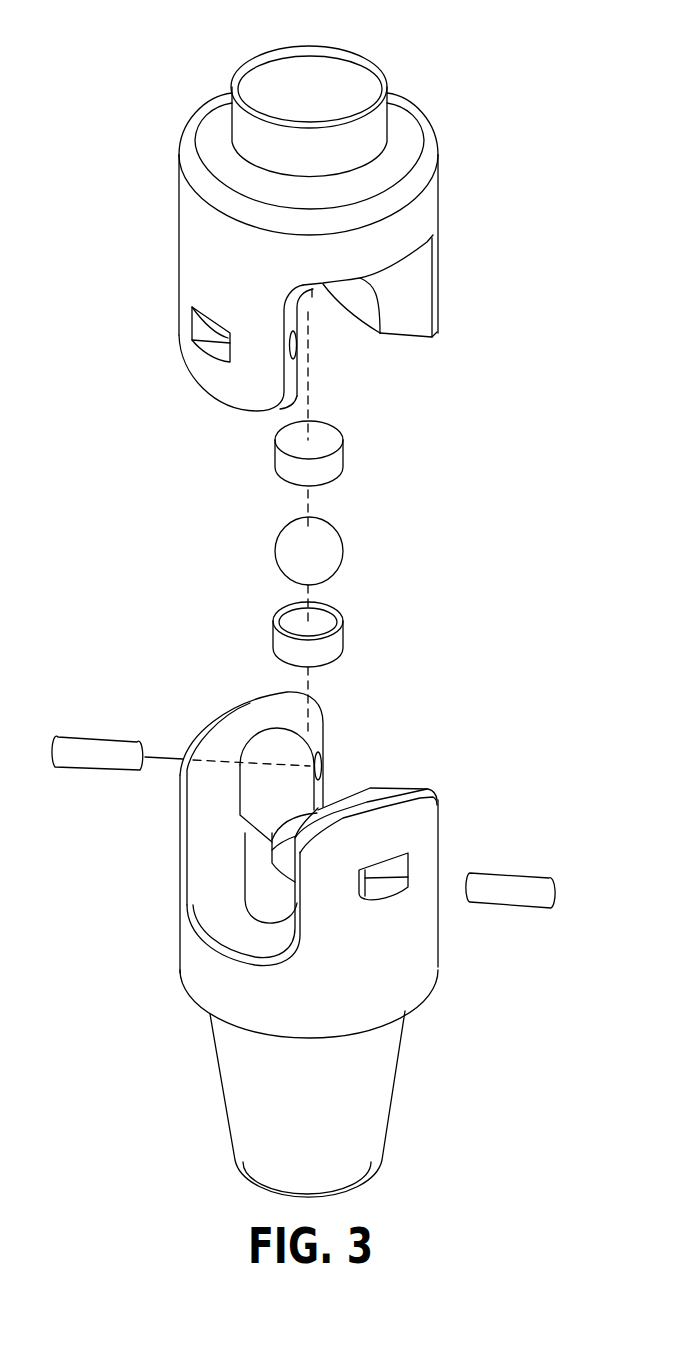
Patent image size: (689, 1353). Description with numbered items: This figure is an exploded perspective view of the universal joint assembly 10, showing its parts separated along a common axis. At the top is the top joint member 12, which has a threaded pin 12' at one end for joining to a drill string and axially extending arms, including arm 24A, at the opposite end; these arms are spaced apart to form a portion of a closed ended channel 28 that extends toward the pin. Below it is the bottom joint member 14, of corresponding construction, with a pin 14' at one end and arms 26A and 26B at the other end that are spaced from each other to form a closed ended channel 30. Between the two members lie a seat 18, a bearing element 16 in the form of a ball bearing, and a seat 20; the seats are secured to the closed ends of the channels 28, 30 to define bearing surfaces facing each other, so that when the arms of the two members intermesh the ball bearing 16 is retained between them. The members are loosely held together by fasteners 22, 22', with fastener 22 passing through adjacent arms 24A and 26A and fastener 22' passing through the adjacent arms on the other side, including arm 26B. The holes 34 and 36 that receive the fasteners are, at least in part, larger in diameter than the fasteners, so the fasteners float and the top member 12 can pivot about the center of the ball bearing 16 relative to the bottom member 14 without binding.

The universal joint assembly 10 is at (128, 68).
The top joint member 12 is at (347, 254).
The pin 12' is at (341, 111).
The bottom joint member 14 is at (322, 931).
The pin 14' is at (336, 1104).
The bearing element 16 is at (343, 551).
The seat 18 is at (343, 453).
The seat 20 is at (343, 636).
The fastener 22 is at (510, 863).
The fastener 22' is at (97, 725).
The arm 24A is at (438, 300).
The arm 26A is at (439, 806).
The arm 26B is at (203, 728).
The closed ended channel 28 is at (345, 355).
The closed ended channel 30 is at (354, 764).
The hole 34 is at (221, 338).
The hole 36 is at (369, 902).